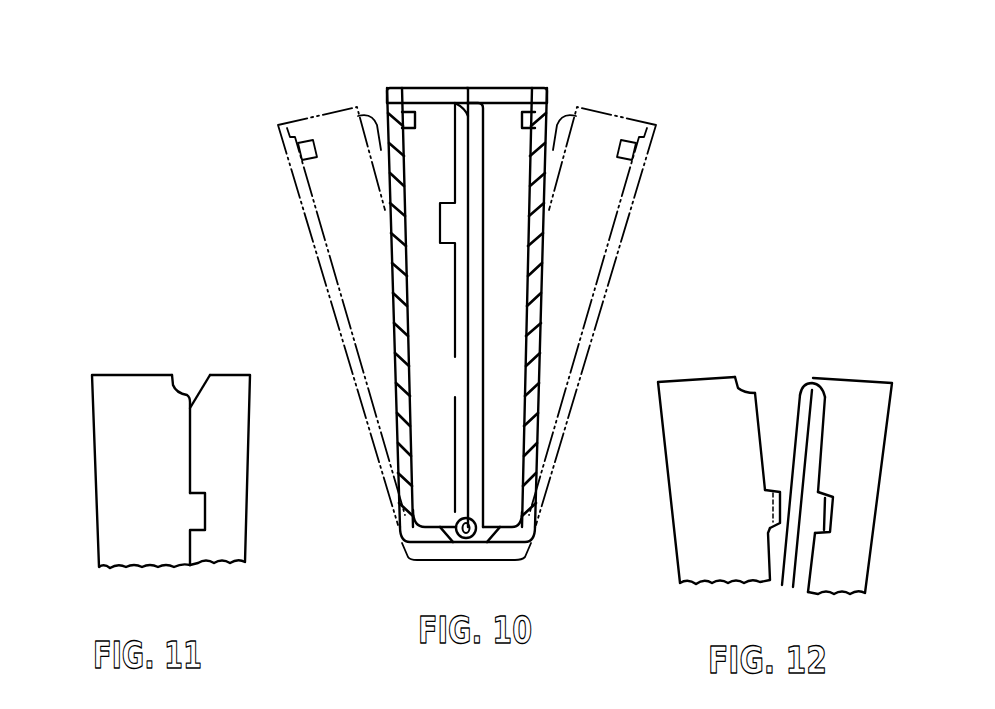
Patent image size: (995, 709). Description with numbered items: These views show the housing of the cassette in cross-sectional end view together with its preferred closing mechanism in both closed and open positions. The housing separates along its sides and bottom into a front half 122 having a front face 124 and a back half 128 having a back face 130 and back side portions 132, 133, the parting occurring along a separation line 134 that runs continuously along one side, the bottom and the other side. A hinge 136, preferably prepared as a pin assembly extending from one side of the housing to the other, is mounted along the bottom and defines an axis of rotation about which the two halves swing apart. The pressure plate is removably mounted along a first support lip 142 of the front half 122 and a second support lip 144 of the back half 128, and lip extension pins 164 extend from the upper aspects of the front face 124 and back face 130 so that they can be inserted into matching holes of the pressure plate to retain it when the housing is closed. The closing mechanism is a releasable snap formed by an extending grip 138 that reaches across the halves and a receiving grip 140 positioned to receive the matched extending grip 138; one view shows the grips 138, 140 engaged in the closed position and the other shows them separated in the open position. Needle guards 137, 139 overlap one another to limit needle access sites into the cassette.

In FIG. 10, the front half 122 is at (392, 208).
In FIG. 10, the back half 128 is at (542, 208).
In FIG. 10, the front face 124 is at (384, 114).
In FIG. 10, the back face 130 is at (548, 113).
In FIG. 10, the first support lip 142 is at (402, 92).
In FIG. 10, the second support lip 144 is at (535, 97).
In FIG. 10, the lip extension pin 164 is at (404, 112).
In FIG. 10, the separation line 134 is at (455, 103).
In FIG. 11, the separation line 134 is at (169, 380).
In FIG. 12, the separation line 134 is at (811, 389).
In FIG. 10, the hinge 136 is at (467, 543).
In FIG. 11, the back side portion 132 is at (110, 410).
In FIG. 12, the back side portion 132 is at (673, 426).
In FIG. 11, the back side portion 133 is at (248, 400).
In FIG. 12, the back side portion 133 is at (860, 390).
In FIG. 11, the needle guard 137 is at (213, 375).
In FIG. 12, the needle guard 137 is at (750, 387).
In FIG. 11, the extending grip 138 is at (198, 510).
In FIG. 12, the extending grip 138 is at (772, 503).
In FIG. 12, the needle guard 139 is at (802, 420).
In FIG. 12, the receiving grip 140 is at (823, 492).